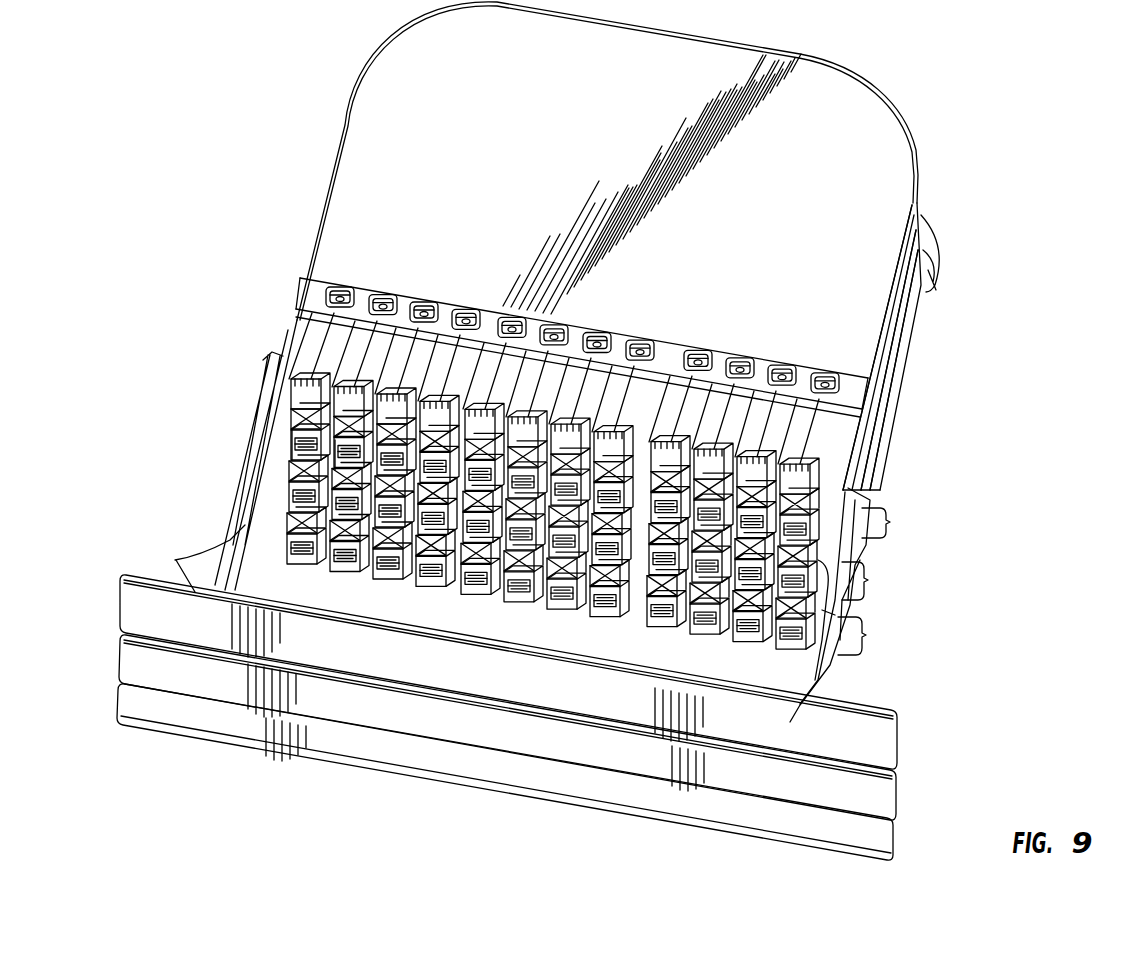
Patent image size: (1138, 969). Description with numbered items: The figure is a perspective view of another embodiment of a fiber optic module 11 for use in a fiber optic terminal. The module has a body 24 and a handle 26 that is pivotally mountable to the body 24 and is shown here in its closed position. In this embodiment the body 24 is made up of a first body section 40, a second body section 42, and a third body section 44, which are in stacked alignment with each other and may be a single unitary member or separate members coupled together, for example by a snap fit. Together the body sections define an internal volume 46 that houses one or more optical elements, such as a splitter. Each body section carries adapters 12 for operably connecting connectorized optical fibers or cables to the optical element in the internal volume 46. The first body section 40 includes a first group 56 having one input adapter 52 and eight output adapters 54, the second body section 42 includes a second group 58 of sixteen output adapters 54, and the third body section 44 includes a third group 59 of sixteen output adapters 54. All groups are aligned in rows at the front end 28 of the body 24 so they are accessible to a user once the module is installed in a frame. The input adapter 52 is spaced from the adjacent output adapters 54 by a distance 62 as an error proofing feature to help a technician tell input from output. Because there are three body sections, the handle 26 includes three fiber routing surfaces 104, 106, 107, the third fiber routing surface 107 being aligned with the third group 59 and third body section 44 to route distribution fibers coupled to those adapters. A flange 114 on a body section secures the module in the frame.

The fiber optic module 11 is at (985, 112).
The adapters 12 is at (318, 395).
The body 24 is at (285, 198).
The handle 26 is at (554, 717).
The front end 28 is at (450, 600).
The first body section 40 is at (893, 448).
The second body section 42 is at (887, 378).
The third body section 44 is at (885, 330).
The internal volume 46 is at (397, 143).
The input adapter 52 is at (775, 630).
The output adapters 54 is at (290, 440).
The first group 56 is at (868, 635).
The second group 58 is at (870, 580).
The third group 59 is at (892, 522).
The distance 62 is at (770, 670).
The first fiber routing surface 104 is at (880, 836).
The second fiber routing surface 106 is at (900, 797).
The third fiber routing surface 107 is at (898, 757).
The flange 114 is at (905, 407).